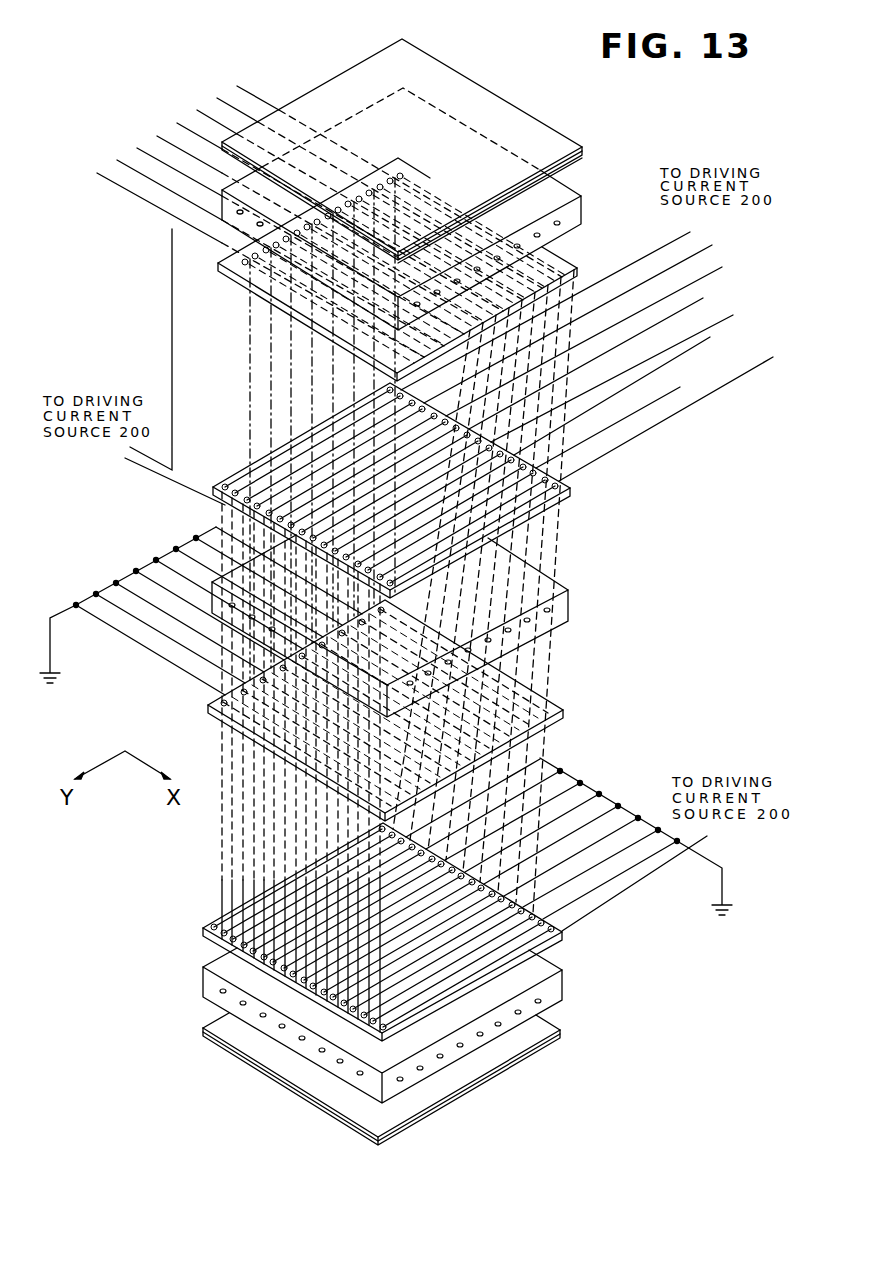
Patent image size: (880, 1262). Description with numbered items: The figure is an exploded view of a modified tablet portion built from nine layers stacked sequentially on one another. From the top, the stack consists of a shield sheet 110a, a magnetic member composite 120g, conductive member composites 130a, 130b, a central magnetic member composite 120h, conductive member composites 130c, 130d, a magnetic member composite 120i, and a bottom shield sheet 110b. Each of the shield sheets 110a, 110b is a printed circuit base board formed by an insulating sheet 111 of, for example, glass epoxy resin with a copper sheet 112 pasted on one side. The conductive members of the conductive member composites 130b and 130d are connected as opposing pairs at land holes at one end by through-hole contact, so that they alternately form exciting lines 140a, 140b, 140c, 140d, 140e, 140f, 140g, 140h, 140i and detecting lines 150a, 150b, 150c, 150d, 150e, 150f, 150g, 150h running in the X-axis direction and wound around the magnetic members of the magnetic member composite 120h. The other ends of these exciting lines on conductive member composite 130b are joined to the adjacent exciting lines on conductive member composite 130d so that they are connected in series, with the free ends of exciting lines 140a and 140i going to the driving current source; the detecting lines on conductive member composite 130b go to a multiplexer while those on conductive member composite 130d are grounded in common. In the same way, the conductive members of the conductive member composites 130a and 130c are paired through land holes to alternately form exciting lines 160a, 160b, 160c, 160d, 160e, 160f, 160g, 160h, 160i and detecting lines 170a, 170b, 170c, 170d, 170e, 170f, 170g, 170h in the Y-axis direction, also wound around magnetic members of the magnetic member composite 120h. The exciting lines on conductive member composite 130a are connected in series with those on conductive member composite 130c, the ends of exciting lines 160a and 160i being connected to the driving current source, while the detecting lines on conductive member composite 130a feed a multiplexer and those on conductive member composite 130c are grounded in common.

The shield sheet 110a is at (505, 108).
The shield sheet 110b is at (562, 1032).
The insulating sheet 111 is at (583, 150).
The copper sheet 112 is at (538, 130).
The magnetic member composite 120g is at (577, 195).
The magnetic member composite 120h is at (570, 598).
The magnetic member composite 120i is at (568, 995).
The conductive member composite 130a is at (575, 270).
The conductive member composite 130b is at (570, 495).
The conductive member composite 130c is at (210, 705).
The conductive member composite 130d is at (568, 933).
The exciting line 140a is at (222, 930).
The exciting line 140b is at (242, 945).
The exciting line 140c is at (262, 957).
The exciting line 140d is at (282, 968).
The exciting line 140e is at (302, 980).
The exciting line 140f is at (322, 992).
The exciting line 140g is at (342, 1003).
The exciting line 140h is at (362, 1015).
The exciting line 140i is at (380, 1030).
The detecting line 150a is at (627, 290).
The detecting line 150b is at (716, 270).
The detecting line 150c is at (690, 305).
The detecting line 150d is at (706, 328).
The detecting line 150e is at (765, 362).
The detecting line 150f is at (710, 340).
The detecting line 150g is at (680, 388).
The detecting line 150h is at (657, 424).
The exciting line 160a is at (140, 466).
The exciting line 160b is at (555, 672).
The exciting line 160c is at (550, 690).
The exciting line 160d is at (555, 703).
The exciting line 160e is at (552, 718).
The exciting line 160f is at (527, 748).
The exciting line 160g is at (540, 765).
The exciting line 160h is at (222, 720).
The exciting line 160i is at (172, 345).
The detecting line 170a is at (277, 73).
The detecting line 170b is at (220, 98).
The detecting line 170c is at (200, 108).
The detecting line 170d is at (177, 122).
The detecting line 170e is at (157, 134).
The detecting line 170f is at (137, 147).
The detecting line 170g is at (125, 140).
The detecting line 170h is at (104, 178).